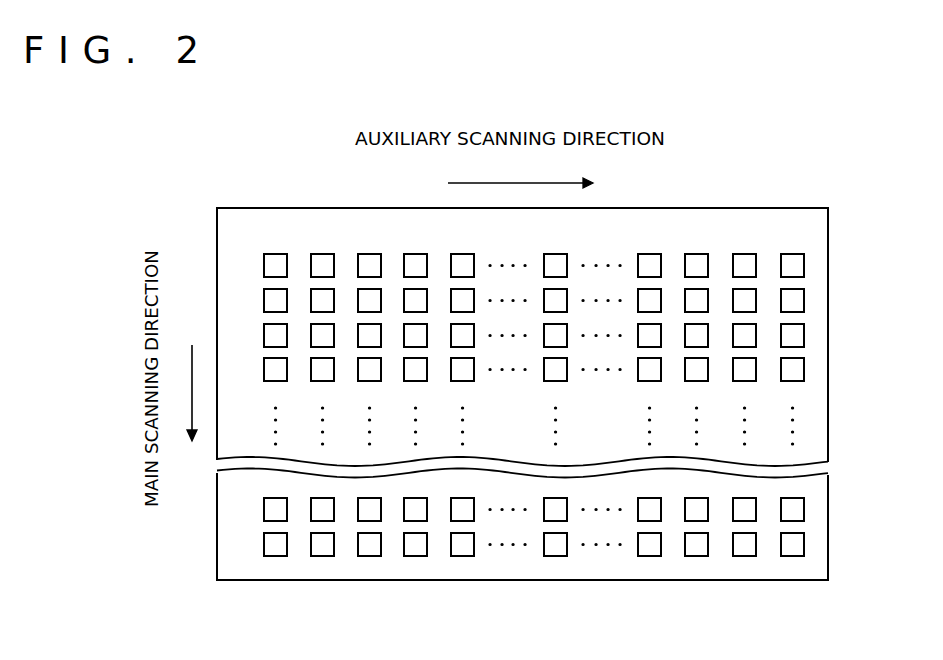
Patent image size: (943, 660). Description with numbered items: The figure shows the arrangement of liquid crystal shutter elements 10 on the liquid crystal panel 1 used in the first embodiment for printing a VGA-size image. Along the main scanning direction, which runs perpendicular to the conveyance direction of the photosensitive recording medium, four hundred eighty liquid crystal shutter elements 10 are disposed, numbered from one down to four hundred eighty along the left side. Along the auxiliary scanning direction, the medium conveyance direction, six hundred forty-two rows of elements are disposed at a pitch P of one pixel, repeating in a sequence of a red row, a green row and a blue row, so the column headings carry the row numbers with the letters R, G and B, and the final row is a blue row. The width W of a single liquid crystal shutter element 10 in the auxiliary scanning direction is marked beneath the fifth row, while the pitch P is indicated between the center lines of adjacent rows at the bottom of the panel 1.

The liquid crystal panel 1 is at (216, 230).
The liquid crystal shutter element 10 is at (805, 264).
The element width W is at (430, 392).
The pitch P is at (370, 627).